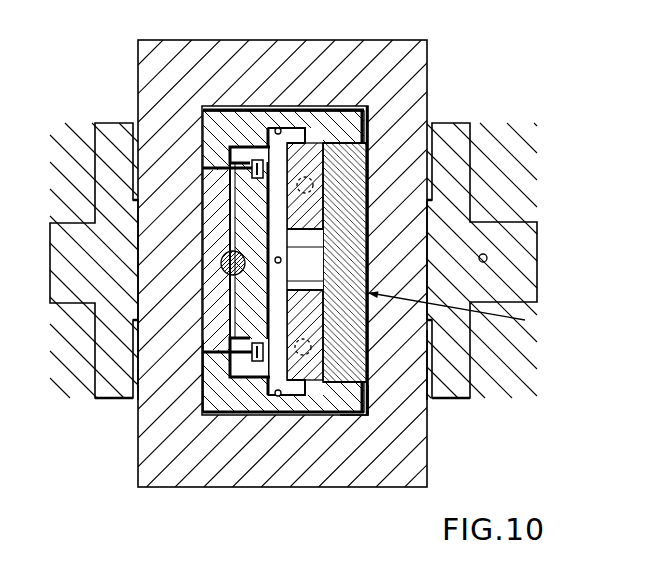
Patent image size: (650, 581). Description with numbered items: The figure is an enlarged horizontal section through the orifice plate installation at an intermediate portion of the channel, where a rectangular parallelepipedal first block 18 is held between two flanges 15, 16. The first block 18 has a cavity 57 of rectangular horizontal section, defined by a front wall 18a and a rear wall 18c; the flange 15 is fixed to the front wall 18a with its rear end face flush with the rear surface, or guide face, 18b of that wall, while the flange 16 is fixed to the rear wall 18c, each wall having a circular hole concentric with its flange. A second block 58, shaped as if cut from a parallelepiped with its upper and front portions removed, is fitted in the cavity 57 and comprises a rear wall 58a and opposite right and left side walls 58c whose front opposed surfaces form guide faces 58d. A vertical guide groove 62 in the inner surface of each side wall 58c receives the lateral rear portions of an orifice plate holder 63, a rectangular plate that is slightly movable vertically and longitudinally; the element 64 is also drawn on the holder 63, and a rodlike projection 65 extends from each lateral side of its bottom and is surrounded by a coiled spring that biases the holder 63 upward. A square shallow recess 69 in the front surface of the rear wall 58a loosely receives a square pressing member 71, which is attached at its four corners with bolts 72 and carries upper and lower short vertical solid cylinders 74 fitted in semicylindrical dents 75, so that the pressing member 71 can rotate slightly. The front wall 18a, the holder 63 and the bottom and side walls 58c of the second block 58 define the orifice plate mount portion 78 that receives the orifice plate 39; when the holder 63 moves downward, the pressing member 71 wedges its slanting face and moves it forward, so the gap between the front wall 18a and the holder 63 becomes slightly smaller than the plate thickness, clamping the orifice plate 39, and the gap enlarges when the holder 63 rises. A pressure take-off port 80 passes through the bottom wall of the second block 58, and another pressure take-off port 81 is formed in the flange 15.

The flange 15 is at (458, 160).
The flange 16 is at (103, 157).
The first block 18 is at (170, 65).
The front wall 18a is at (413, 370).
The rear surface (guide face) of the front wall 18b is at (363, 405).
The rear wall 18c is at (155, 350).
The orifice plate 39 is at (355, 173).
The cavity 57 is at (230, 413).
The second block 58 is at (220, 117).
The rear wall 58a is at (207, 378).
The side walls 58c is at (317, 107).
The guide faces 58d is at (360, 154).
The vertical guide groove 62 is at (277, 127).
The orifice plate holder 63 is at (324, 403).
The gap 64 is at (310, 237).
The rodlike projection 65 is at (317, 322).
The square shallow recess 69 is at (230, 151).
The pressing member 71 is at (252, 157).
The bolts 72 is at (230, 343).
The short vertical solid cylinders 74 is at (240, 273).
The semicylindrical dents 75 is at (221, 253).
The orifice plate mount portion 78 is at (461, 314).
The pressure take-off port 80 is at (283, 260).
The pressure take-off port 81 is at (484, 255).